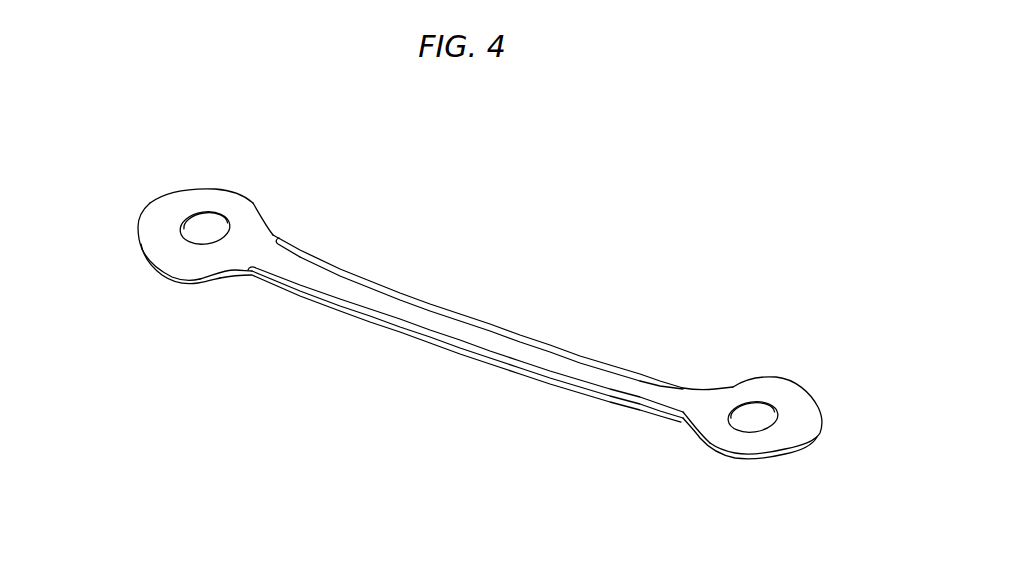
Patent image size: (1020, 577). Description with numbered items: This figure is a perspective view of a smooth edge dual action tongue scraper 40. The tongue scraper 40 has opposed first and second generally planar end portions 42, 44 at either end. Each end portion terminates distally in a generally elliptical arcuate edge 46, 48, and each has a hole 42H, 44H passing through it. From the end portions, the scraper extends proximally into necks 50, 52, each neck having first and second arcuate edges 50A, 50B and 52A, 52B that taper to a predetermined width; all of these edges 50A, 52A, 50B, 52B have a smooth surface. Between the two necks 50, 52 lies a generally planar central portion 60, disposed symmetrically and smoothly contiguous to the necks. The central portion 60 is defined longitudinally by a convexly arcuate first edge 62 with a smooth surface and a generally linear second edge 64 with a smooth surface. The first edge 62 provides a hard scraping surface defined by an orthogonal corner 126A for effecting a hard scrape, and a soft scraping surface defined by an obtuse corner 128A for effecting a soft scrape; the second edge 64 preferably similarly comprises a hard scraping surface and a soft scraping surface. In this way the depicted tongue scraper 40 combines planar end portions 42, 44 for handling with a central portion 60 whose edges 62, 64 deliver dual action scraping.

The tongue scraper 40 is at (493, 224).
The first end portion 42 is at (141, 187).
The hole 42H is at (205, 227).
The second end portion 44 is at (809, 378).
The hole 44H is at (753, 417).
The elliptical arcuate edge 46 is at (138, 228).
The elliptical arcuate edge 48 is at (814, 447).
The neck 50 is at (268, 196).
The first arcuate edge 50A is at (268, 226).
The second arcuate edge 50B is at (227, 275).
The neck 52 is at (730, 374).
The first arcuate edge 52A is at (717, 387).
The second arcuate edge 52B is at (684, 424).
The central portion 60 is at (488, 308).
The first edge 62 is at (480, 360).
The second edge 64 is at (590, 352).
The orthogonal corner 126A is at (549, 385).
The obtuse corner 128A is at (416, 296).